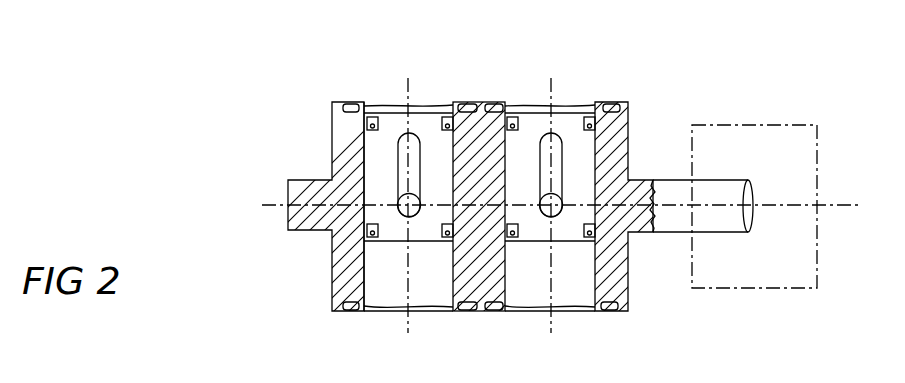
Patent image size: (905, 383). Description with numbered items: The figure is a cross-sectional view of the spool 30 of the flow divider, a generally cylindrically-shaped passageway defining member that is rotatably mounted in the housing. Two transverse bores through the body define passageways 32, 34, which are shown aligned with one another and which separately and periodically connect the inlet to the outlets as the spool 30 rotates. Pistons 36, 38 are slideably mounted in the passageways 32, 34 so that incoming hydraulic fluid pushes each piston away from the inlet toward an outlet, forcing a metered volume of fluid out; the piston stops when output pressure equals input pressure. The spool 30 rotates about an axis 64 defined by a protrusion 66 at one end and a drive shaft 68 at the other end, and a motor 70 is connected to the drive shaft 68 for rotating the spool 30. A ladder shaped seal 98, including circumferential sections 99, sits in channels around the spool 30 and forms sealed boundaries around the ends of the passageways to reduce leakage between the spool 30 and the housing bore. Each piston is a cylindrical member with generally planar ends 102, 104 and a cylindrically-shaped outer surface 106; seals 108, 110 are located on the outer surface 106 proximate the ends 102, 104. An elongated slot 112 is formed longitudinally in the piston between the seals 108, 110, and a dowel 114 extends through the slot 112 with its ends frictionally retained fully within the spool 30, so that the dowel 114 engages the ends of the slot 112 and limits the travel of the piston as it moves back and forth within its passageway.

The spool 30 is at (326, 299).
The passageway 32 is at (420, 300).
The passageway 34 is at (577, 300).
The piston 36 is at (436, 92).
The piston 38 is at (569, 92).
The axis 64 is at (268, 203).
The protrusion 66 is at (332, 232).
The drive shaft 68 is at (670, 180).
The motor 70 is at (748, 124).
The ladder shaped seal 98 is at (628, 90).
The circumferential sections 99 is at (610, 105).
The piston end 102 is at (419, 107).
The piston end 104 is at (370, 232).
The outer surface 106 is at (375, 148).
The seal 108 is at (370, 127).
The seal 110 is at (365, 227).
The elongated slot 112 is at (412, 180).
The dowel 114 is at (418, 220).